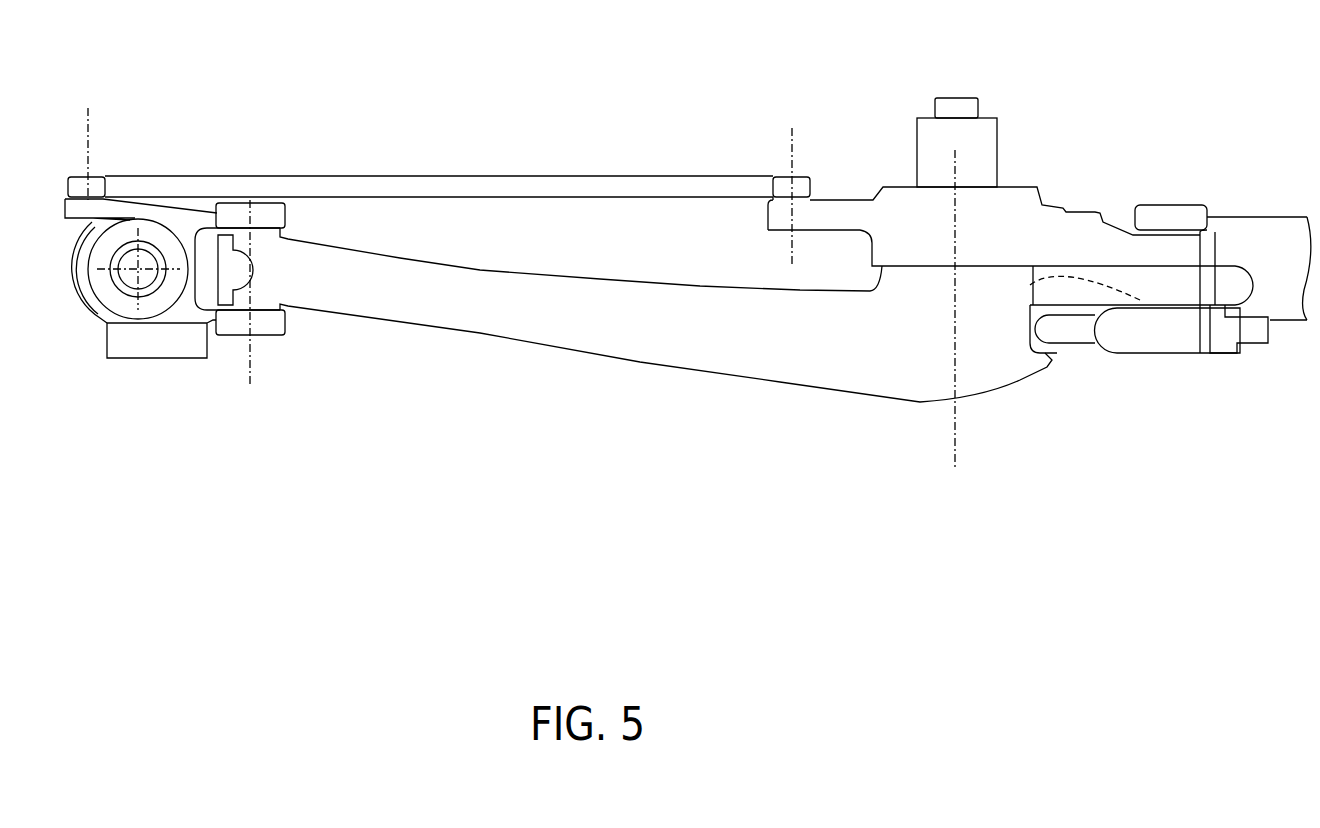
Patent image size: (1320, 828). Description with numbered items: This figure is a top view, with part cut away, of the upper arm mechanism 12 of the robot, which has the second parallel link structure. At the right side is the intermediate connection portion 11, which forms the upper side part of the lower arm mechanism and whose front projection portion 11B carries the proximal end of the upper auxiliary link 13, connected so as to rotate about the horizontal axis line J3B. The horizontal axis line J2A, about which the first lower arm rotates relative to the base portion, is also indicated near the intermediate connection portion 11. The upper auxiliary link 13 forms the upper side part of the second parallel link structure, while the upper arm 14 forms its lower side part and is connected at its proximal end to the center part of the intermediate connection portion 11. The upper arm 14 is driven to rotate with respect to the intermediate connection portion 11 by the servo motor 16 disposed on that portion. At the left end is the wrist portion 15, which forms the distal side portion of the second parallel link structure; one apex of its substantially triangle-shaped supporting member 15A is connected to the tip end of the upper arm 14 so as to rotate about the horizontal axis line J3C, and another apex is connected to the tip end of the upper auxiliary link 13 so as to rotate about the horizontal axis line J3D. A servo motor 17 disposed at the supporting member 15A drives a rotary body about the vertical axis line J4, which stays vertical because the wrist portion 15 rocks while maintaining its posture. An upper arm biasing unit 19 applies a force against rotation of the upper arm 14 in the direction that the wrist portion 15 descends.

The intermediate connection portion 11 is at (893, 186).
The front projection portion 11B is at (775, 232).
The upper arm mechanism 12 is at (600, 100).
The upper auxiliary link 13 is at (468, 176).
The upper arm 14 is at (623, 360).
The wrist portion 15 is at (64, 254).
The supporting member 15A is at (177, 213).
The servo motor 16 is at (997, 130).
The servo motor 17 is at (137, 272).
The upper arm biasing unit 19 is at (1114, 378).
The horizontal axis line J2A is at (957, 427).
The horizontal axis line J3B is at (790, 133).
The horizontal axis line J3C is at (252, 355).
The horizontal axis line J3D is at (88, 125).
The vertical axis line J4 is at (115, 283).